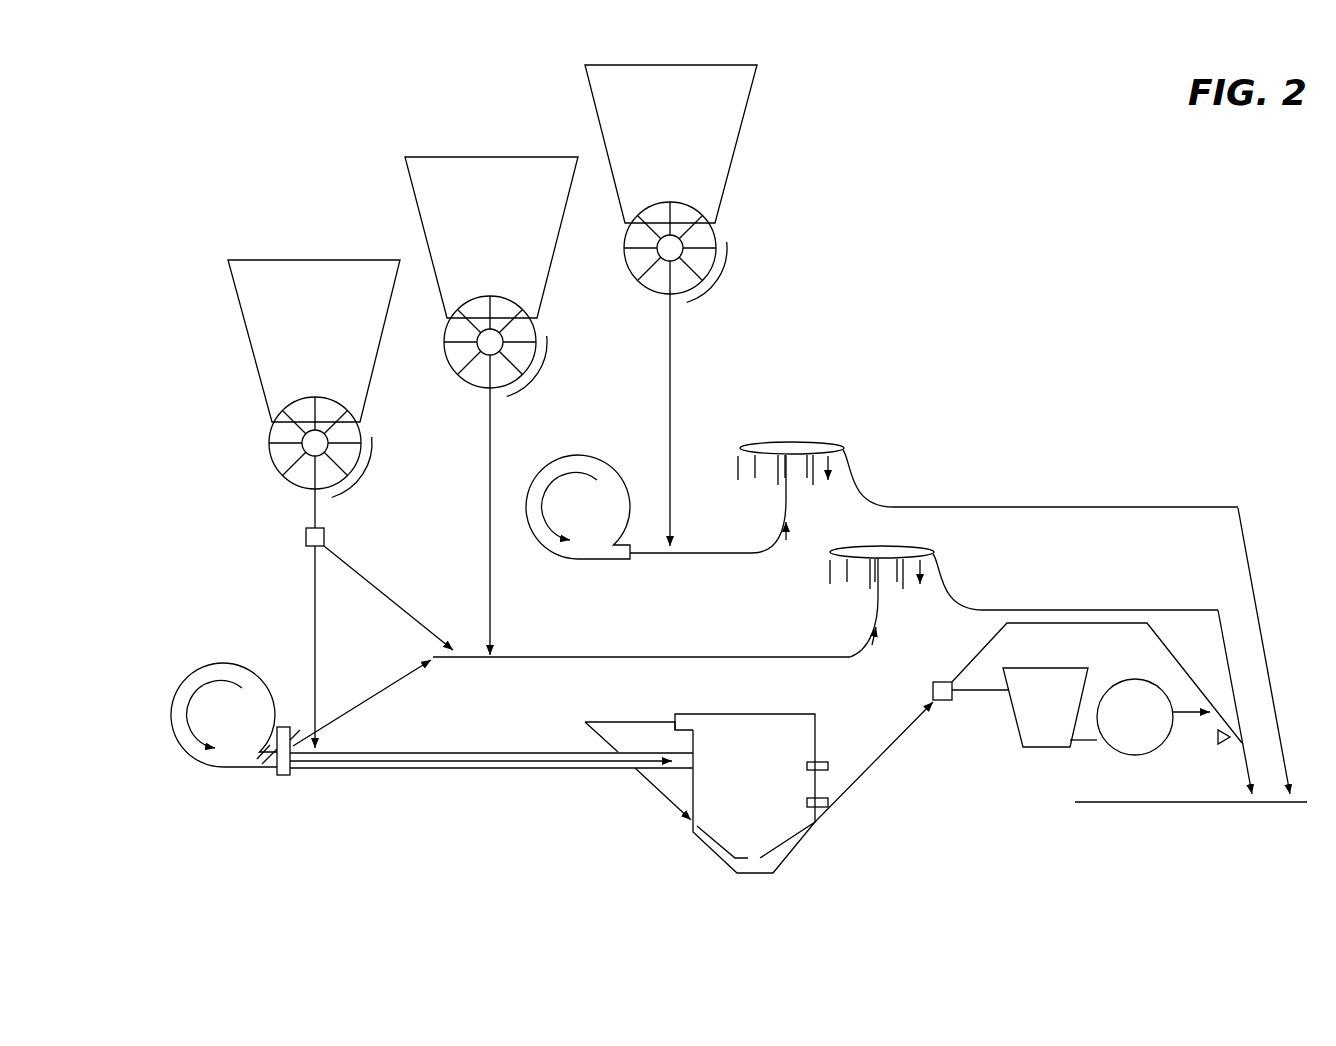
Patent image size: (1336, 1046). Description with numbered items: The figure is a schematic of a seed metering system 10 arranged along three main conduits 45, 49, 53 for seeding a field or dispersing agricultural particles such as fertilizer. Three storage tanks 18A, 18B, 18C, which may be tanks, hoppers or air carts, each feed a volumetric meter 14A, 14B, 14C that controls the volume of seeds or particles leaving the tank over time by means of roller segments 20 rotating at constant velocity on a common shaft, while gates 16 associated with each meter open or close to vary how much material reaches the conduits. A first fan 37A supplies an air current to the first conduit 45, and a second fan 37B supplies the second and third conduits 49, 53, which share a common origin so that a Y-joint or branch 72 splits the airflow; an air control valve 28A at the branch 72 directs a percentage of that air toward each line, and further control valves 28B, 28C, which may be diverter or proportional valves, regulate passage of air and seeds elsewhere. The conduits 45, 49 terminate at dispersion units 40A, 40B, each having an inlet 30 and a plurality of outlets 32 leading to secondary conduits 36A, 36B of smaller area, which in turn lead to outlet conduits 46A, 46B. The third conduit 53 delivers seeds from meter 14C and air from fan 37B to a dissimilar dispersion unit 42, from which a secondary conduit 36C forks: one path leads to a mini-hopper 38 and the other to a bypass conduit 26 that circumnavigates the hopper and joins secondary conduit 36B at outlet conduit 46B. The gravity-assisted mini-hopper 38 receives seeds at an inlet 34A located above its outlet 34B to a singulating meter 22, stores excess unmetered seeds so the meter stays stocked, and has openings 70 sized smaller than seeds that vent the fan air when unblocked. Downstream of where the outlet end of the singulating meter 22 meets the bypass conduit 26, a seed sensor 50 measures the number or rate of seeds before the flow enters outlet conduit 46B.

The seed metering system 10 is at (914, 256).
The volumetric meter 14A is at (648, 303).
The volumetric meter 14B is at (468, 389).
The volumetric meter 14C is at (256, 455).
The gate 16 is at (732, 270).
The storage tank 18A is at (598, 118).
The storage tank 18B is at (424, 238).
The storage tank 18C is at (250, 340).
The roller segment 20 is at (655, 262).
The singulating meter 22 is at (1162, 745).
The bypass conduit 26 is at (990, 644).
The air control valve 28A is at (283, 776).
The control valve 28B is at (306, 534).
The control valve 28C is at (946, 701).
The inlet 30 is at (754, 546).
The outlet 32 is at (858, 447).
The inlet 34A is at (1009, 705).
The outlet 34B is at (1077, 742).
The secondary conduit 36A is at (737, 470).
The secondary conduit 36B is at (830, 582).
The secondary conduit 36C is at (843, 797).
The first fan 37A is at (573, 456).
The second fan 37B is at (194, 672).
The mini-hopper 38 is at (1017, 667).
The dispersion unit 40A is at (750, 432).
The dispersion unit 40B is at (827, 612).
The third dispersion unit 42 is at (821, 844).
The first main conduit 45 is at (695, 556).
The outlet conduit 46A is at (1247, 553).
The outlet conduit 46B is at (1223, 627).
The second main conduit 49 is at (630, 655).
The seed sensor 50 is at (1226, 746).
The third main conduit 53 is at (402, 770).
The opening 70 is at (1089, 682).
The branch 72 is at (277, 771).